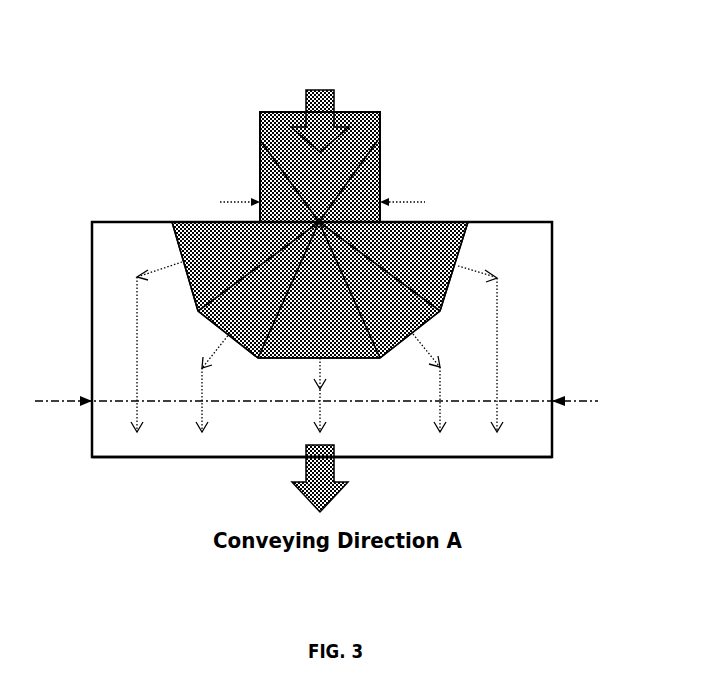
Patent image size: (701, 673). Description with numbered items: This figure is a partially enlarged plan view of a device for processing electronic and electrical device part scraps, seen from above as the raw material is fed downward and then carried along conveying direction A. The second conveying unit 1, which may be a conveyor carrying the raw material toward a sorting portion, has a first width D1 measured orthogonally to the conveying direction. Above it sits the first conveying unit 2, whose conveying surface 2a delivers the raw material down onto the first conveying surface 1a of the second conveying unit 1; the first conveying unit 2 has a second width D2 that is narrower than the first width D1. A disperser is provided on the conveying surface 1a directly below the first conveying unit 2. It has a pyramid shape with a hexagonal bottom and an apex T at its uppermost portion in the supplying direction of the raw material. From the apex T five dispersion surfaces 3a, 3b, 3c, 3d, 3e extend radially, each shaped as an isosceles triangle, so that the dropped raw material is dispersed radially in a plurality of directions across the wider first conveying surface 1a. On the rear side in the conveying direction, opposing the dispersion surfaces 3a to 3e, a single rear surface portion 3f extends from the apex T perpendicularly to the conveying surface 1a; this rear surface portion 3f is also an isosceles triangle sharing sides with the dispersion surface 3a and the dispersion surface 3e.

The second conveying unit 1 is at (116, 218).
The first conveying surface 1a is at (178, 438).
The first conveying unit 2 is at (381, 168).
The conveying surface 2a is at (260, 177).
The dispersion surface 3a is at (222, 282).
The dispersion surface 3b is at (237, 318).
The dispersion surface 3c is at (343, 357).
The dispersion surface 3d is at (436, 323).
The dispersion surface 3e is at (459, 249).
The rear surface portion 3f is at (432, 221).
The apex T is at (260, 142).
The first width D1 is at (518, 400).
The second width D2 is at (357, 110).